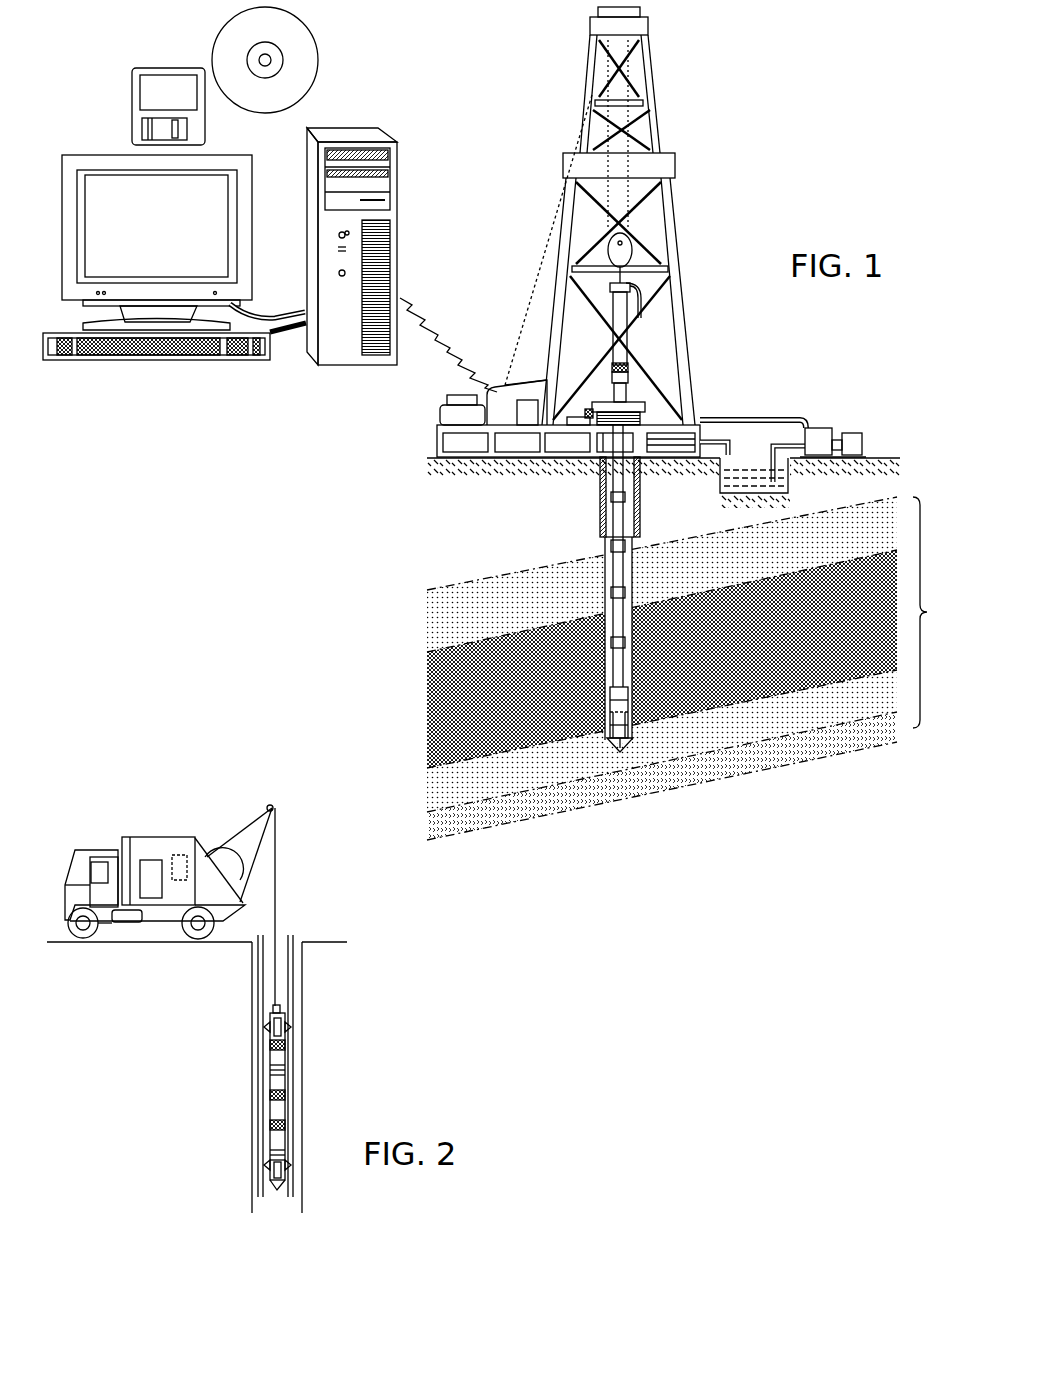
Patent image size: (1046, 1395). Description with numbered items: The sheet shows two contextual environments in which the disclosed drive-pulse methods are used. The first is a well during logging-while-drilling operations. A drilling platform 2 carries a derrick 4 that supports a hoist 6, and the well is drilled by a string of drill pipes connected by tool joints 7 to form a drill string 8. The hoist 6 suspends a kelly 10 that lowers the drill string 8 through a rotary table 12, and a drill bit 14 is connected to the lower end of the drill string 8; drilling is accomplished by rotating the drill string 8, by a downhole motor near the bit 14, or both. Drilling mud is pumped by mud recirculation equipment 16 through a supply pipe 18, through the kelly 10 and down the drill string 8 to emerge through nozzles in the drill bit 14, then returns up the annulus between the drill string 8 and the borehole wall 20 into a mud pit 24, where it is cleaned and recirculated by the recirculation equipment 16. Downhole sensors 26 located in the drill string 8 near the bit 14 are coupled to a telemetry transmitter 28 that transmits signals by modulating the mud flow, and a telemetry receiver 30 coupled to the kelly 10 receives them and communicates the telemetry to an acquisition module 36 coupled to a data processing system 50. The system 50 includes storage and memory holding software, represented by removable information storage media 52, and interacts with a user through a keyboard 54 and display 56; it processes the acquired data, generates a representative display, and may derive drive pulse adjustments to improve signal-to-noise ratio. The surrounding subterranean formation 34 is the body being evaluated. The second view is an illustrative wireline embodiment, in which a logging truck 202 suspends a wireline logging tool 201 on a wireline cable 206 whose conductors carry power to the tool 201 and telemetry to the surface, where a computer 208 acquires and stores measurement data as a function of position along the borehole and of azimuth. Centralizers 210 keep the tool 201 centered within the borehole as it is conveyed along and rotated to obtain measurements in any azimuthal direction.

In FIG. 1, the drilling platform 2 is at (437, 434).
In FIG. 1, the derrick 4 is at (659, 128).
In FIG. 1, the hoist 6 is at (636, 236).
In FIG. 1, the tool joints 7 is at (612, 545).
In FIG. 1, the drill string 8 is at (607, 556).
In FIG. 1, the kelly 10 is at (620, 307).
In FIG. 1, the rotary table 12 is at (636, 402).
In FIG. 1, the drill bit 14 is at (632, 745).
In FIG. 1, the mud recirculation equipment 16 is at (822, 432).
In FIG. 1, the supply pipe 18 is at (770, 417).
In FIG. 1, the borehole wall 20 is at (636, 551).
In FIG. 1, the mud pit 24 is at (762, 486).
In FIG. 1, the downhole sensors 26 is at (609, 722).
In FIG. 1, the telemetry transmitter 28 is at (629, 724).
In FIG. 1, the telemetry receiver 30 is at (626, 368).
In FIG. 1, the subterranean formation 34 is at (697, 668).
In FIG. 1, the acquisition module 36 is at (535, 400).
In FIG. 1, the data processing system 50 is at (308, 296).
In FIG. 1, the removable information storage media 52 is at (213, 57).
In FIG. 1, the keyboard 54 is at (66, 367).
In FIG. 1, the display 56 is at (80, 302).
In FIG. 2, the wireline logging tool 201 is at (284, 1030).
In FIG. 2, the logging truck 202 is at (135, 837).
In FIG. 2, the wireline cable 206 is at (280, 939).
In FIG. 2, the computer 208 is at (183, 853).
In FIG. 2, the centralizers 210 is at (268, 1027).